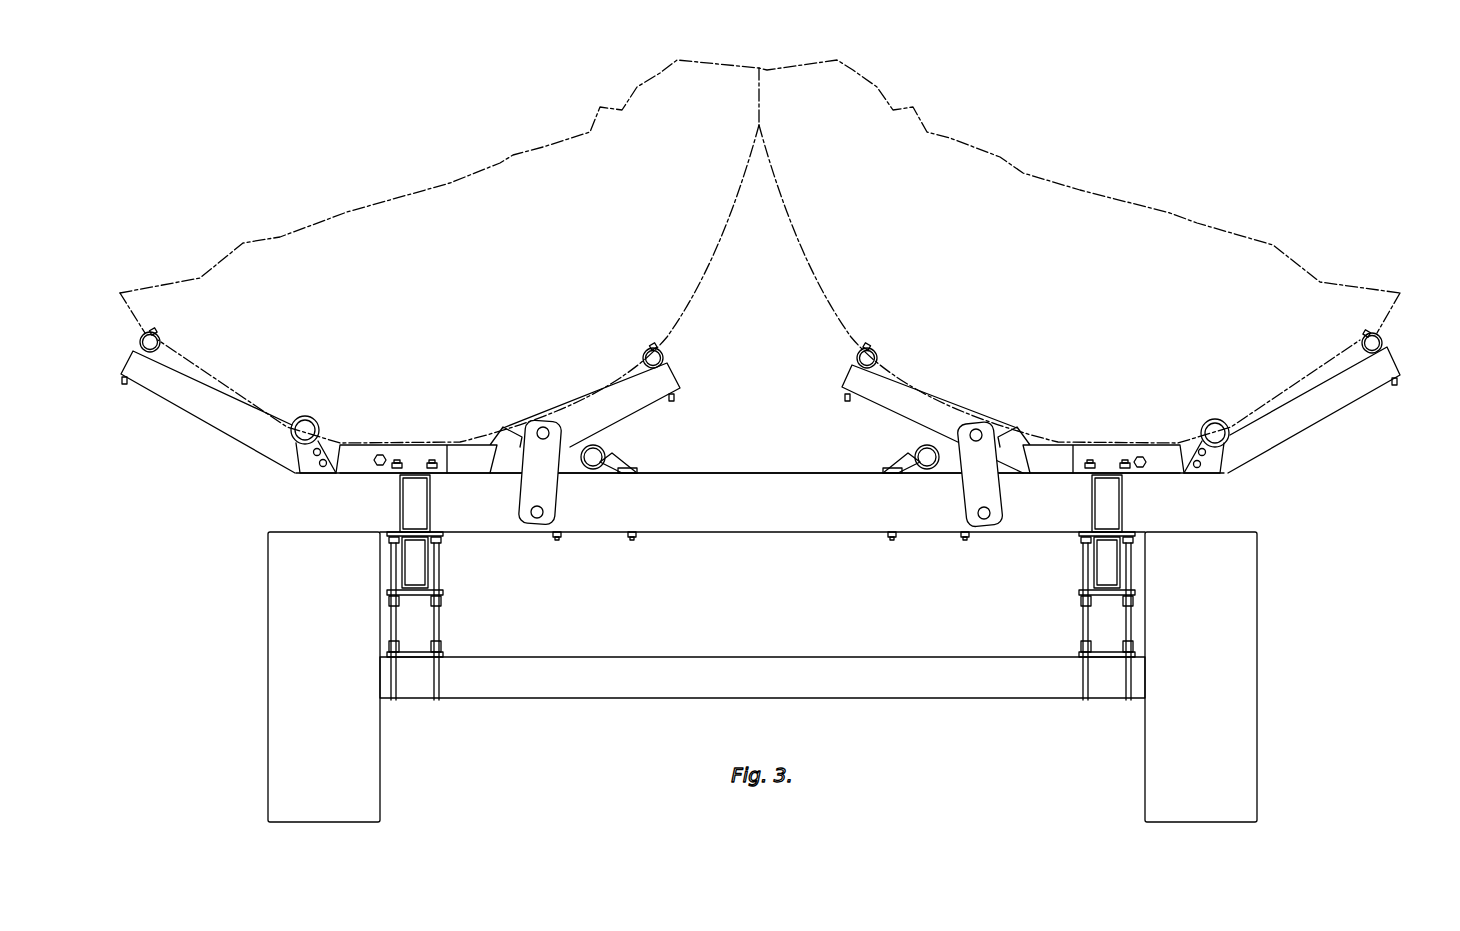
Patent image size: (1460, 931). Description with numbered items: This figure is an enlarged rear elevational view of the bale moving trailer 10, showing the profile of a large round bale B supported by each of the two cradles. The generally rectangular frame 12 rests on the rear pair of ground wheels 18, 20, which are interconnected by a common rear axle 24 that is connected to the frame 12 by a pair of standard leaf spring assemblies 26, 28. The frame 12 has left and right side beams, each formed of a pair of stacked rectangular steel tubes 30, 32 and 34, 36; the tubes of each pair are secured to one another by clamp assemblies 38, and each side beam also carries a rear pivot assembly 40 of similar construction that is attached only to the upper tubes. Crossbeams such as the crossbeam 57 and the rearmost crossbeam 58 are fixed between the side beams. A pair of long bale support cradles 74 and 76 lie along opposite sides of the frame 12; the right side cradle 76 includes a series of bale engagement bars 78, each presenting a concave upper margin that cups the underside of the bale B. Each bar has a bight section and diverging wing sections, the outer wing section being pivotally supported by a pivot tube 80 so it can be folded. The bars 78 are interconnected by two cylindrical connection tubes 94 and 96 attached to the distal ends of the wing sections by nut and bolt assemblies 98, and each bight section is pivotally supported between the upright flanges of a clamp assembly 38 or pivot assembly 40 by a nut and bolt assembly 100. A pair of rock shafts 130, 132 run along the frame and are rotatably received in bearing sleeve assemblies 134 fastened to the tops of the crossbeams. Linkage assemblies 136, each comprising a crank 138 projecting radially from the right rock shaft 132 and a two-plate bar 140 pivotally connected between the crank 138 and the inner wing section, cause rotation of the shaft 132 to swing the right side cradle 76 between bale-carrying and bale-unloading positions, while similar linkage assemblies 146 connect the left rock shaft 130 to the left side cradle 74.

The round bale B is at (450, 183).
The bale moving trailer 10 is at (780, 677).
The frame 12 is at (1055, 520).
The rear ground wheel 18 is at (288, 778).
The rear ground wheel 20 is at (1247, 795).
The rear axle 24 is at (785, 663).
The leaf spring assembly 26 is at (420, 627).
The leaf spring assembly 28 is at (1105, 630).
The tube 30 is at (432, 505).
The tube 32 is at (427, 567).
The tube 34 is at (1123, 513).
The tube 36 is at (1123, 563).
The clamp assembly 38 is at (445, 587).
The rear pivot assembly 40 is at (757, 503).
The crossbeam 57 is at (720, 525).
The rearmost crossbeam 58 is at (492, 525).
The left side cradle 74 is at (197, 421).
The right side cradle 76 is at (1292, 417).
The bale engagement bar 78 is at (1280, 435).
The pivot tube 80 is at (1215, 423).
The connection tube 94 is at (860, 355).
The connection tube 96 is at (1380, 340).
The nut and bolt assembly 98 is at (872, 347).
The nut and bolt assembly 100 is at (1142, 457).
The left rock shaft 130 is at (600, 450).
The right rock shaft 132 is at (918, 449).
The bearing sleeve assembly 134 is at (627, 462).
The linkage assembly 136 is at (958, 507).
The crank 138 is at (938, 498).
The bar 140 is at (965, 498).
The linkage assembly 146 is at (565, 508).